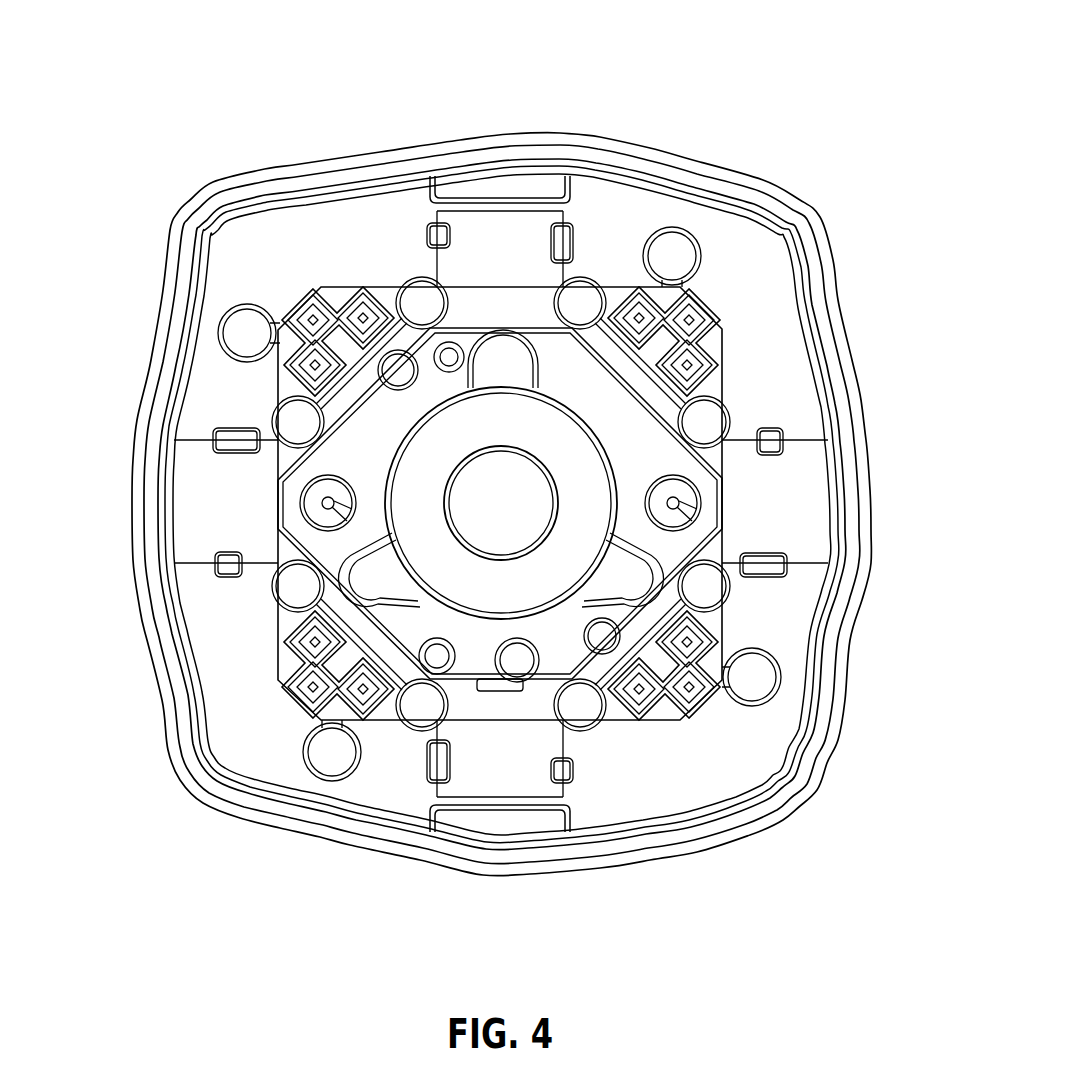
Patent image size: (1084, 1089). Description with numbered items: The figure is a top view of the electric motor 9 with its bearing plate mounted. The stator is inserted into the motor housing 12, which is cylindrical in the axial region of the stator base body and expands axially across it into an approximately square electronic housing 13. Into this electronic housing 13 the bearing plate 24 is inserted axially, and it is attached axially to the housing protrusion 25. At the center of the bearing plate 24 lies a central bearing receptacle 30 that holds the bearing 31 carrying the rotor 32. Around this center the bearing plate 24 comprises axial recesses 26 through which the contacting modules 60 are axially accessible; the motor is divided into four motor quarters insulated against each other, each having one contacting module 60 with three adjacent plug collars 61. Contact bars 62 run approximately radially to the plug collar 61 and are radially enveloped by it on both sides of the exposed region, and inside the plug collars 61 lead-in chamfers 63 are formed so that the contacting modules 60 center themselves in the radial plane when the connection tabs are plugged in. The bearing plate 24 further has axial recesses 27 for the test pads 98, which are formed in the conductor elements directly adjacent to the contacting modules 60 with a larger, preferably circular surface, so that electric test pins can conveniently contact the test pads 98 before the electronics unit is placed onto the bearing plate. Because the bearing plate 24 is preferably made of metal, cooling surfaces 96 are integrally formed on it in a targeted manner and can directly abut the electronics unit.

The electric motor 9 is at (176, 183).
The motor housing 12 is at (860, 590).
The electronic housing 13 is at (842, 731).
The housing protrusion 25 is at (778, 785).
The bearing plate 24 is at (533, 437).
The bearing 31 is at (487, 480).
The central bearing receptacle 30 is at (586, 416).
The rotor 32 is at (357, 305).
The plug collar 61 is at (700, 318).
The axial recess 26 is at (293, 700).
The lead-in chamfer 63 is at (727, 375).
The contact bar 62 is at (312, 300).
The test pad 98 is at (293, 425).
The contacting module 60 is at (724, 393).
The axial recess 27 is at (417, 727).
The cooling surface 96 is at (782, 500).